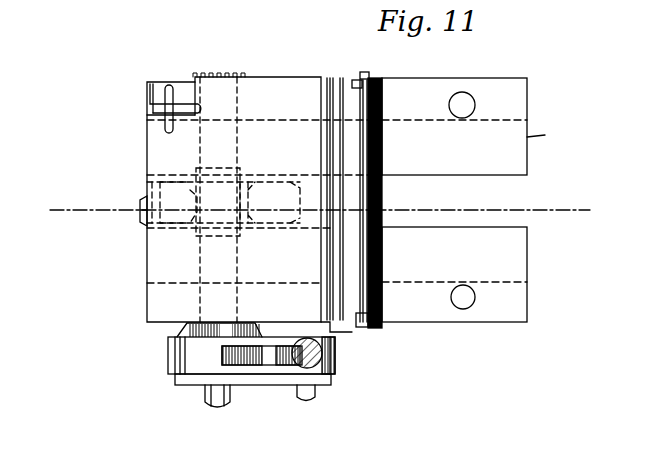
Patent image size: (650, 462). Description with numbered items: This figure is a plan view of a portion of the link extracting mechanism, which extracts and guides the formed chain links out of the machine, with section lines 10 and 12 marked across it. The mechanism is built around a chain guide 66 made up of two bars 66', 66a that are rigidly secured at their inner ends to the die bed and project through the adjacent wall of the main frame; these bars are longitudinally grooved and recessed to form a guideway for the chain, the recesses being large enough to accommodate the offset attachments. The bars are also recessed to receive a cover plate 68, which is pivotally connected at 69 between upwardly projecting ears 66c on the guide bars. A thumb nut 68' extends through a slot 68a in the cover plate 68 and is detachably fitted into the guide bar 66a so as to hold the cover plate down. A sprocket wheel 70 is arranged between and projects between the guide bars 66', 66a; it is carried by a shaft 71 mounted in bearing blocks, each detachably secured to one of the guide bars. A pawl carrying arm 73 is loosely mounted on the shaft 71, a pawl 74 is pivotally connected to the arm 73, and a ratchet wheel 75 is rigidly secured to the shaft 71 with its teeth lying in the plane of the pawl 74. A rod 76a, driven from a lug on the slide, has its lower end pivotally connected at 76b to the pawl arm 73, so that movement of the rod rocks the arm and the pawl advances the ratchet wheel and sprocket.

The section line 10- 10 is at (67, 228).
The section line 12- 12 is at (312, 45).
The chain guide 66 is at (454, 117).
The guide bar 66a is at (551, 136).
The guide bar 66' is at (473, 274).
The upwardly projecting ears 66c is at (380, 80).
The cover plate 68 is at (264, 188).
The thumb nut 68' is at (161, 94).
The slot 68a is at (185, 104).
The pivotal connection 69 is at (370, 74).
The sprocket wheel 70 is at (140, 200).
The shaft 71 is at (217, 406).
The pawl carrying arm 73 is at (295, 366).
The pawl 74 is at (252, 385).
The ratchet wheel 75 is at (178, 378).
The rod 76a is at (336, 365).
The pivotal connection 76b is at (312, 400).